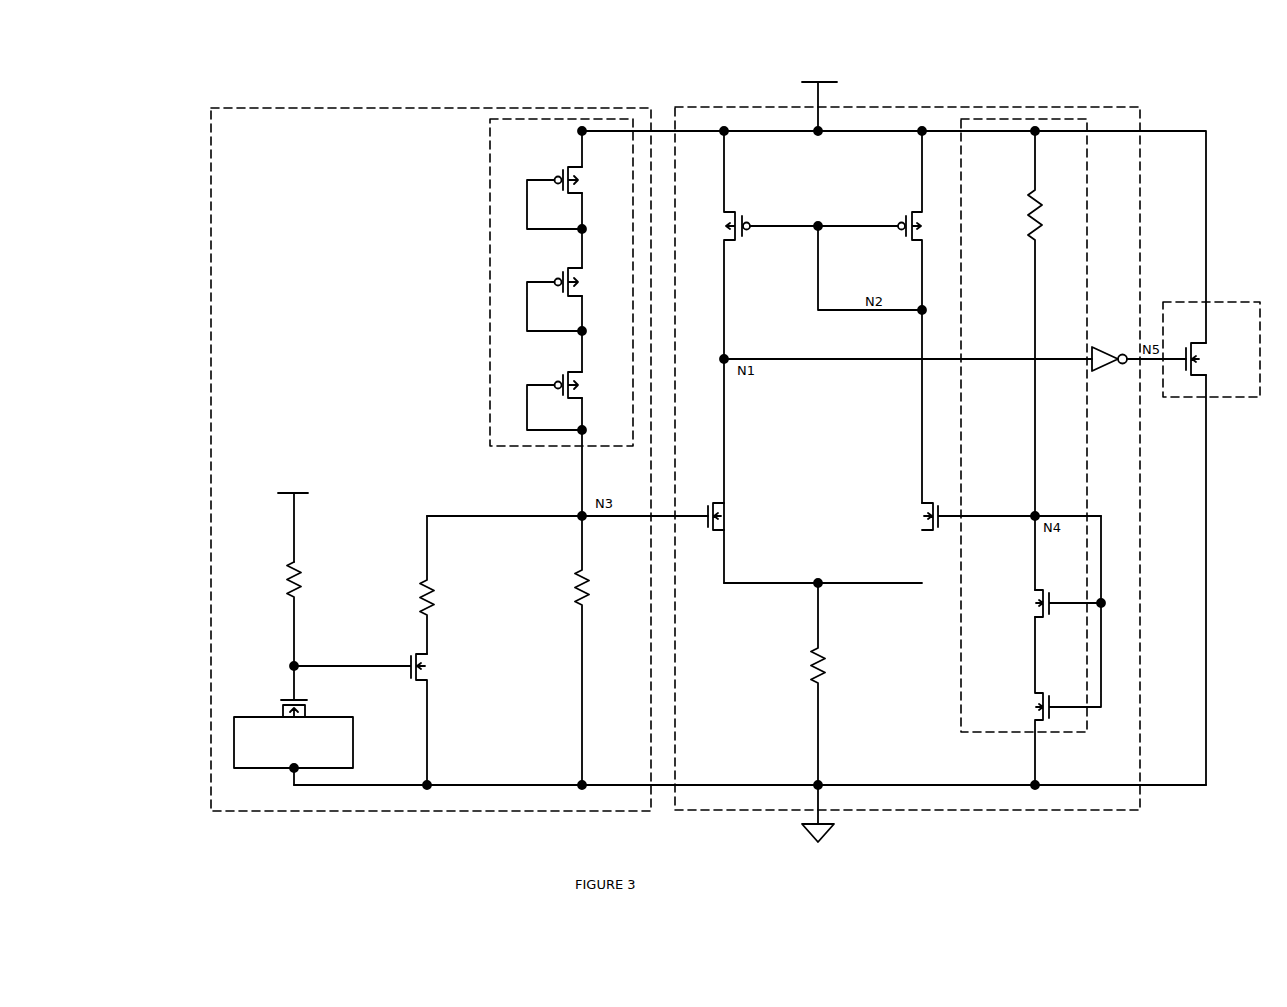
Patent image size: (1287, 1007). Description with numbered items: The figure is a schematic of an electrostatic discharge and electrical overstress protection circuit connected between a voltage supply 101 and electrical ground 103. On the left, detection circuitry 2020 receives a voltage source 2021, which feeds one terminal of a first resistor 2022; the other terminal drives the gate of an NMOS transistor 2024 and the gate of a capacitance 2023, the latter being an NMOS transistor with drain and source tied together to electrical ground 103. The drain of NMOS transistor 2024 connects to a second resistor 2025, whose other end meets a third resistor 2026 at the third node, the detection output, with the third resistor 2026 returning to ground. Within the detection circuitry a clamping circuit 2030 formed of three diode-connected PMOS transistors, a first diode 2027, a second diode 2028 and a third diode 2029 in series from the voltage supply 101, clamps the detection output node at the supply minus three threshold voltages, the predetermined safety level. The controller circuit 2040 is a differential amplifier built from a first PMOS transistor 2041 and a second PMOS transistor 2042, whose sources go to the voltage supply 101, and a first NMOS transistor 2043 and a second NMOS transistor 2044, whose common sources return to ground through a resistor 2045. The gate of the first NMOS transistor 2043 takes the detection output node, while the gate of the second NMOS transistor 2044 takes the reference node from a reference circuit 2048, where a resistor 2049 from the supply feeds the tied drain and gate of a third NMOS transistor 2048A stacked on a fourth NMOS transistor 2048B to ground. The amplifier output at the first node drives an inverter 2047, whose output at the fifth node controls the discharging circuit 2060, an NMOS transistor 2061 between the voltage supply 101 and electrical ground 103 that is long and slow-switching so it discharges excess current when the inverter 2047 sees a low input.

The voltage supply (VDD) 101 is at (818, 82).
The electrical ground 103 is at (806, 826).
The detection circuitry 2020 is at (503, 108).
The voltage source (VDDQ) 2021 is at (290, 492).
The first resistor 2022 is at (297, 578).
The capacitance 2023 is at (318, 716).
The NMOS transistor 2024 is at (421, 671).
The second resistor 2025 is at (430, 583).
The third resistor 2026 is at (585, 576).
The first PMOS diode 2027 is at (581, 187).
The second PMOS diode 2028 is at (581, 289).
The third PMOS diode 2029 is at (581, 392).
The clamping circuit 2030 is at (490, 255).
The controller circuit 2040 is at (948, 107).
The first PMOS transistor 2041 is at (730, 211).
The second PMOS transistor 2042 is at (912, 243).
The first NMOS transistor 2043 is at (720, 523).
The second NMOS transistor 2044 is at (927, 522).
The resistor 2045 is at (822, 658).
The inverter 2047 is at (1098, 350).
The reference circuit 2048 is at (1087, 278).
The third NMOS transistor 2048A is at (1040, 600).
The fourth NMOS transistor 2048B is at (1040, 704).
The resistor 2049 is at (1038, 213).
The discharging circuit 2060 is at (1222, 302).
The NMOS transistor 2061 is at (1200, 368).